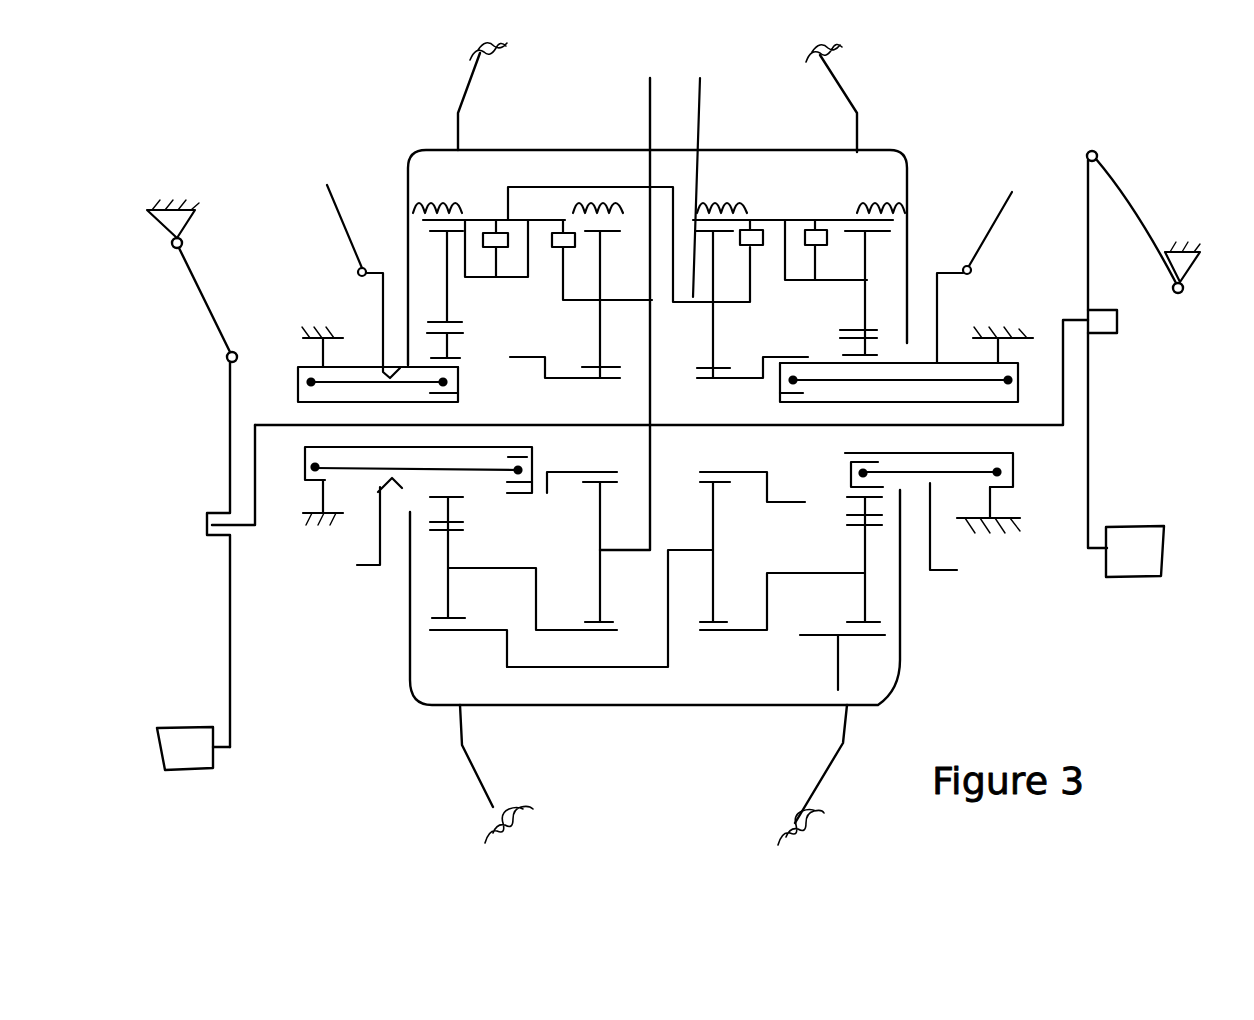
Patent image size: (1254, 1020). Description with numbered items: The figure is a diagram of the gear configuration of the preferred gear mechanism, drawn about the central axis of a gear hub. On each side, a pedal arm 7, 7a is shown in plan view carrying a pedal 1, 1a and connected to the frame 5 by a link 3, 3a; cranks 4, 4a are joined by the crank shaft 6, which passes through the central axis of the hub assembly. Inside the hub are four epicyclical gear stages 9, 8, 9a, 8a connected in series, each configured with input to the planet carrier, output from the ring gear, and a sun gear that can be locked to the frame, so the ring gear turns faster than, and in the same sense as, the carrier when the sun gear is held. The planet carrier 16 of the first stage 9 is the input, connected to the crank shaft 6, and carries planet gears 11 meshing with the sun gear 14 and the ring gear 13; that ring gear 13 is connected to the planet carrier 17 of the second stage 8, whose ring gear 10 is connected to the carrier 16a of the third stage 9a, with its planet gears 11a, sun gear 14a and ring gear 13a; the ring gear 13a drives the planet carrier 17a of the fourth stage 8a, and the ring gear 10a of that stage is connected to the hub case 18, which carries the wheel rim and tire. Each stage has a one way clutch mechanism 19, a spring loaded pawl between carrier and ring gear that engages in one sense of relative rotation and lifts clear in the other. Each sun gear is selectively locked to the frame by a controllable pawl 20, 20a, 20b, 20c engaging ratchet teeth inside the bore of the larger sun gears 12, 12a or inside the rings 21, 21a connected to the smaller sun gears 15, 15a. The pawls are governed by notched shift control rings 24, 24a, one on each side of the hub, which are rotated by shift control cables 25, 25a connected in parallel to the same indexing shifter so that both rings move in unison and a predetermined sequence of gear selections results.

The pedal 1 is at (193, 777).
The pedal 1a is at (1132, 585).
The link 3 is at (198, 302).
The link 3a is at (1138, 195).
The crank 4 is at (262, 497).
The crank 4a is at (1060, 338).
The frame 5 is at (162, 192).
The crank shaft 6 is at (273, 422).
The pedal arm 7 is at (222, 612).
The pedal arm 7a is at (1093, 452).
The second epicyclical gear stage 8 is at (437, 200).
The fourth epicyclical gear stage 8a is at (878, 205).
The first epicyclical gear stage 9 is at (595, 200).
The third epicyclical gear stage 9a is at (722, 200).
The ring gear 10 is at (447, 637).
The ring gear 10a is at (870, 643).
The planet gear 11 is at (442, 598).
The planet gear 11a is at (873, 600).
The larger sun gear 12 is at (437, 372).
The larger sun gear 12a is at (795, 347).
The ring gear 13 is at (598, 625).
The ring gear 13a is at (707, 647).
The sun gear 14 is at (650, 667).
The sun gear 14a is at (685, 613).
The smaller sun gear 15 is at (560, 575).
The smaller sun gear 15a is at (737, 482).
The planet carrier 16 is at (625, 301).
The planet carrier 16a is at (702, 174).
The planet carrier 17 is at (472, 265).
The planet carrier 17a is at (845, 272).
The hub case 18 is at (862, 707).
The one way clutch mechanism 19 is at (513, 232).
The controllable pawl 20 is at (420, 373).
The controllable pawl 20a is at (507, 473).
The controllable pawl 20b is at (905, 365).
The controllable pawl 20c is at (922, 480).
The ring 21 is at (523, 498).
The ring 21a is at (925, 175).
The shift control ring 24 is at (374, 298).
The shift control ring 24a is at (1018, 303).
The shift control cable 25 is at (322, 200).
The shift control cable 25a is at (1013, 203).